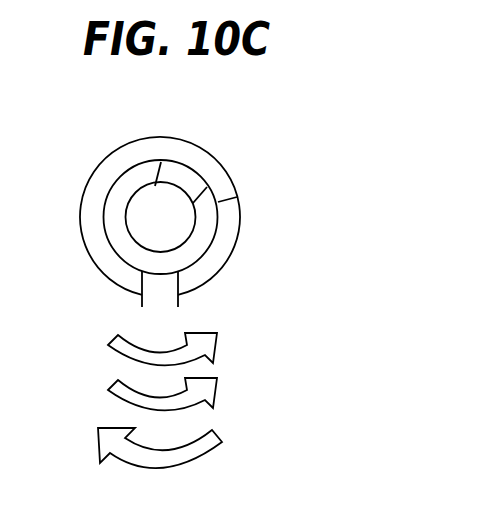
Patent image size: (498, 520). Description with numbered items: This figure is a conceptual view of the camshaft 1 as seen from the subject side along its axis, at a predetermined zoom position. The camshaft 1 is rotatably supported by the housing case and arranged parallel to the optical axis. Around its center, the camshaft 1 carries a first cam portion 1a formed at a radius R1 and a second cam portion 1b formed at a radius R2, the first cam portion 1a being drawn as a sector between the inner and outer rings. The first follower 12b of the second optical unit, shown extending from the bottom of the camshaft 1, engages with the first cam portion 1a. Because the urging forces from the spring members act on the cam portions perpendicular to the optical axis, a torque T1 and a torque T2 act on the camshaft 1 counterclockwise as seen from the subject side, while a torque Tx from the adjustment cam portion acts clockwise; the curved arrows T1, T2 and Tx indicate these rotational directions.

The camshaft 1 is at (185, 140).
The first cam portion 1a is at (193, 183).
The second cam portion 1b is at (110, 167).
The first follower 12b is at (167, 290).
The torque T1 is at (186, 348).
The torque T2 is at (188, 393).
The torque Tx is at (142, 447).